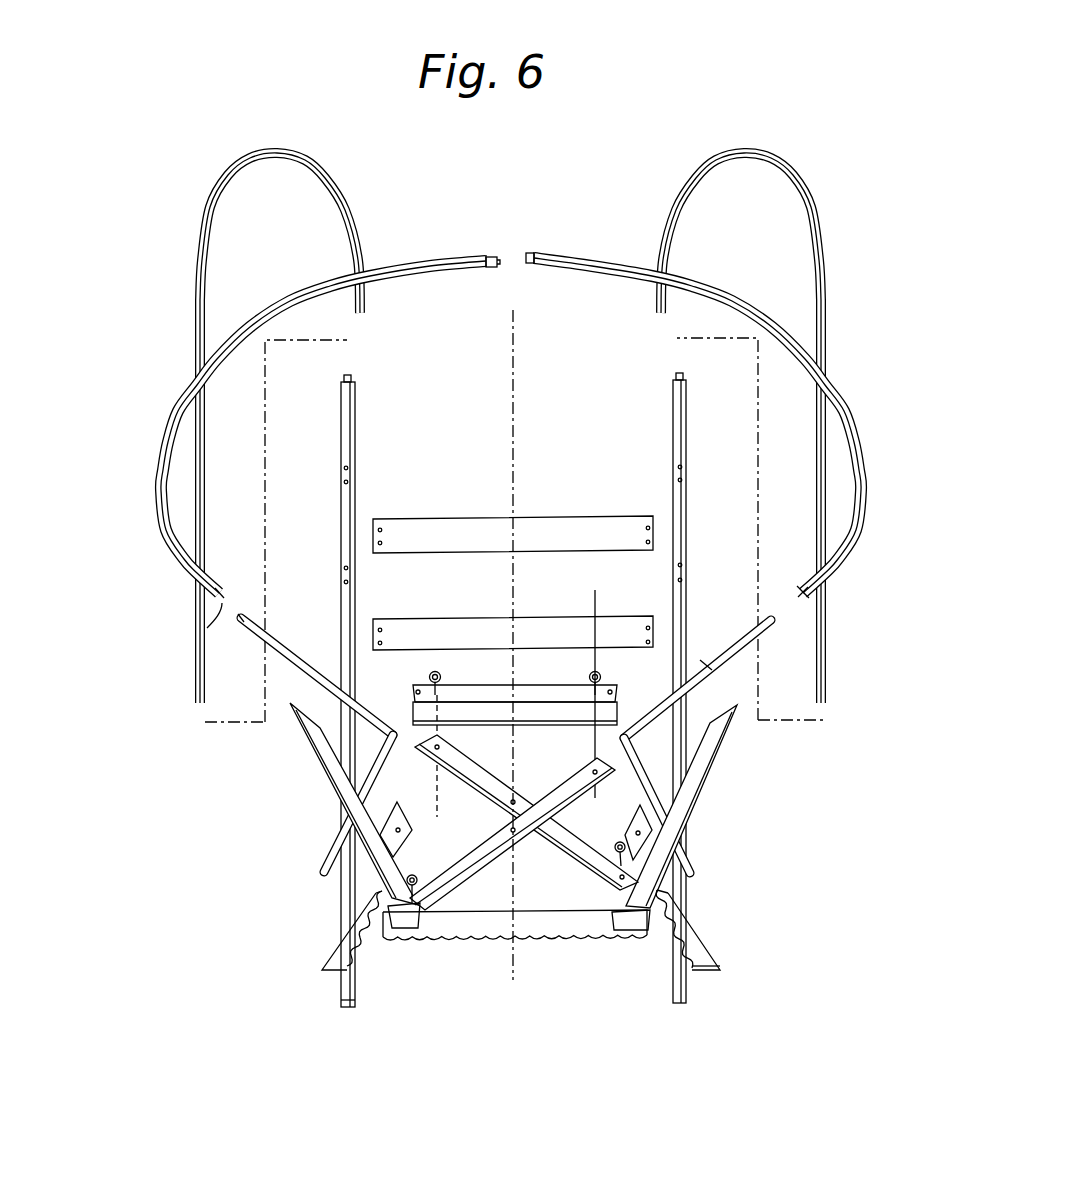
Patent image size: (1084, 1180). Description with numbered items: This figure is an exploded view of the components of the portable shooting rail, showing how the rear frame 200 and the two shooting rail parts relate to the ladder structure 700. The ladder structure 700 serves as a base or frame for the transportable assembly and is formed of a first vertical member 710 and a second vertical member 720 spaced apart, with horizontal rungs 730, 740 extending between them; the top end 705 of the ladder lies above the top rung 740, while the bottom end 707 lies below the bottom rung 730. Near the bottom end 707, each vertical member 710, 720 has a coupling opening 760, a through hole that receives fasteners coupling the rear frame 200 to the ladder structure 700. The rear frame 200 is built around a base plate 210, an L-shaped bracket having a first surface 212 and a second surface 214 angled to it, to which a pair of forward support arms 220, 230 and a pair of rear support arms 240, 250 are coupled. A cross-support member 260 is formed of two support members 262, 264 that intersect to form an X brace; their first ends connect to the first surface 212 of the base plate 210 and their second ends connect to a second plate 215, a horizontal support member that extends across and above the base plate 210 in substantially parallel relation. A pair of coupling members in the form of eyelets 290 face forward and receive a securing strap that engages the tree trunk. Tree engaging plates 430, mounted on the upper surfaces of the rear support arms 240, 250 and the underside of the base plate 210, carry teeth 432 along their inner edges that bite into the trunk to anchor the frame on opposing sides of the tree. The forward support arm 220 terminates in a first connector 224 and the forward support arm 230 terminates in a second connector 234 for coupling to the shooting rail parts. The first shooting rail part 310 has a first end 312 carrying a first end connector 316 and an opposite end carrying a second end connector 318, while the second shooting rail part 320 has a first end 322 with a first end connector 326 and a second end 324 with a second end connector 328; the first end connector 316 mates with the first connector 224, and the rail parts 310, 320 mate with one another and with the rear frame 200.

The rear frame 200 is at (469, 784).
The base plate 210 is at (544, 714).
The first surface 212 is at (605, 713).
The second surface 214 is at (490, 697).
The second plate 215 is at (482, 923).
The forward support arm 220 is at (711, 660).
The first connector 224 is at (771, 613).
The forward support arm 230 is at (272, 640).
The second connector 234 is at (242, 617).
The rear support arm 240 is at (680, 852).
The rear support arm 250 is at (330, 858).
The cross-support member 260 is at (516, 887).
The support member 262 is at (475, 777).
The support member 264 is at (450, 875).
The eyelet 290 is at (432, 675).
The first shooting rail part 310 is at (820, 372).
The first end 312 is at (808, 593).
The first end connector 316 is at (535, 266).
The second end connector 318 is at (528, 256).
The second shooting rail part 320 is at (195, 377).
The first end 322 is at (220, 598).
The second end 324 is at (480, 253).
The first end connector 326 is at (207, 628).
The second end connector 328 is at (492, 268).
The plate 430 is at (342, 937).
The teeth 432 is at (693, 967).
The ladder structure 700 is at (496, 606).
The top end 705 is at (352, 380).
The bottom end 707 is at (348, 1000).
The first vertical member 710 is at (355, 445).
The second vertical member 720 is at (682, 447).
The horizontal support member 730 is at (400, 630).
The horizontal support member 740 is at (413, 530).
The coupling opening 760 is at (683, 565).